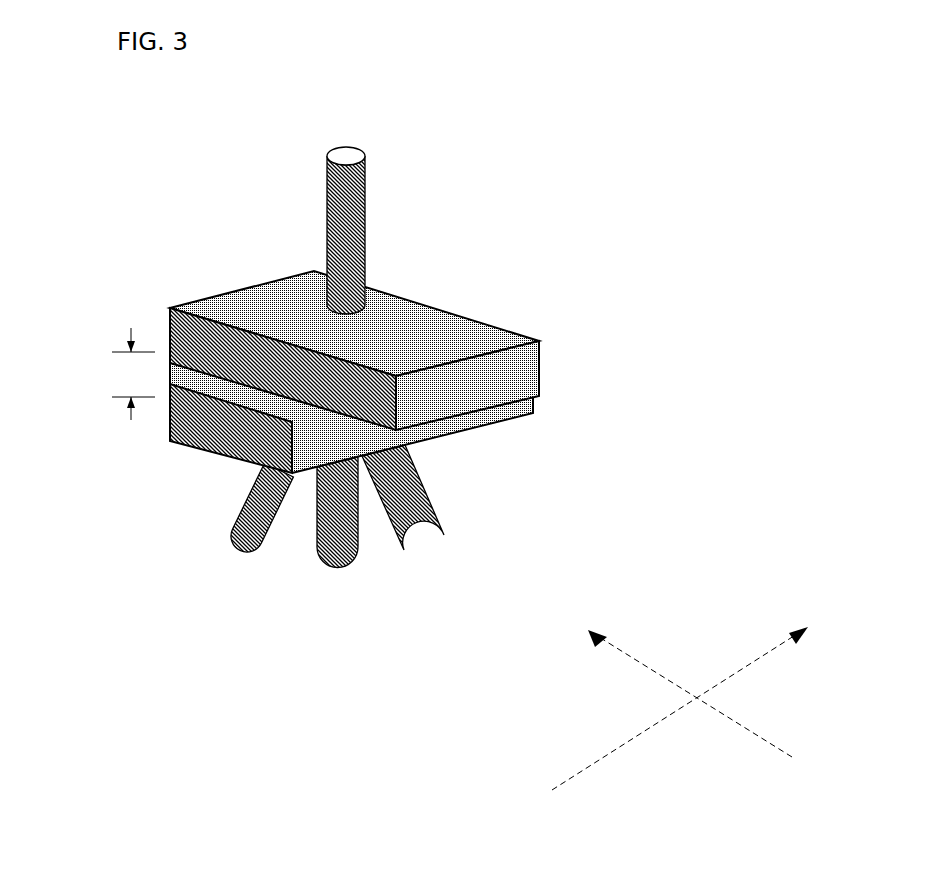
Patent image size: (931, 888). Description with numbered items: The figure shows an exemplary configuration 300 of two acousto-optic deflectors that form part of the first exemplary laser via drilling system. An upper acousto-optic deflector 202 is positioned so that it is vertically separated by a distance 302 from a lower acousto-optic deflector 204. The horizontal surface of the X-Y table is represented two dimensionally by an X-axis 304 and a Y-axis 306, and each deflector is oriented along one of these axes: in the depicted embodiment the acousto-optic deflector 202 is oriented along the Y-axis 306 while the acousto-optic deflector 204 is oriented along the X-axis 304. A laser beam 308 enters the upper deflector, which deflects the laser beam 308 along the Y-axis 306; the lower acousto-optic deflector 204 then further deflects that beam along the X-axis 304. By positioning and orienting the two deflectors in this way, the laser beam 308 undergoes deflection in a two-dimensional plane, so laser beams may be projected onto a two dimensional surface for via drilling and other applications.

The exemplary configuration 300 is at (592, 92).
The acousto-optic deflector 202 is at (240, 290).
The acousto-optic deflector 204 is at (463, 432).
The distance 302 is at (127, 380).
The X-axis 304 is at (728, 677).
The Y-axis 306 is at (653, 668).
The laser beam 308 is at (367, 222).